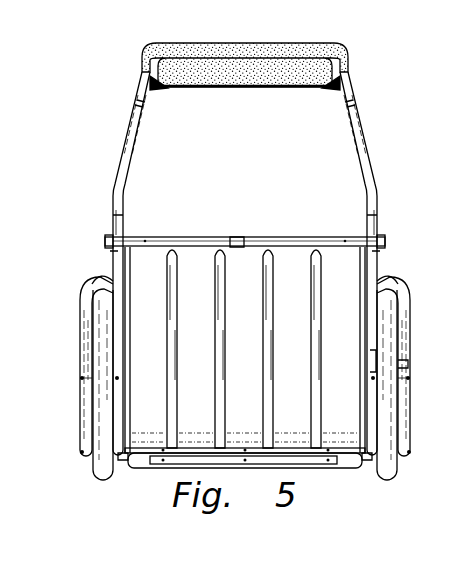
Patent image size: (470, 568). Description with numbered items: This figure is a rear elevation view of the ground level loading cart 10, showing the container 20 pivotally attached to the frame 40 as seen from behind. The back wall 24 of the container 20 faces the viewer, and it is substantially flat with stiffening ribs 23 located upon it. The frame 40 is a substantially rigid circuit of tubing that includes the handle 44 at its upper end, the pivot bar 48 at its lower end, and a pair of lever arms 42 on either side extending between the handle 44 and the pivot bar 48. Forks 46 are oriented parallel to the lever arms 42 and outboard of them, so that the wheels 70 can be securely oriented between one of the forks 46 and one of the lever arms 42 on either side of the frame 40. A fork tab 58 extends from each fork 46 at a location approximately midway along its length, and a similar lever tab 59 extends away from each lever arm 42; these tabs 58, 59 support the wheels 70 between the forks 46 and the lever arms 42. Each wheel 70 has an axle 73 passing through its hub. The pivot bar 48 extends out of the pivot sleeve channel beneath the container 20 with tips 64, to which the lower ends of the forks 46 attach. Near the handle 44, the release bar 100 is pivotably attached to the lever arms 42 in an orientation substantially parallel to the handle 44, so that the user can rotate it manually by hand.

The ground level loading cart 10 is at (123, 72).
The container 20 is at (225, 239).
The stiffening ribs 23 is at (228, 290).
The back wall 24 is at (307, 318).
The frame 40 is at (366, 149).
The lever arms 42 is at (135, 134).
The handle 44 is at (255, 50).
The forks 46 is at (82, 303).
The pivot bar 48 is at (123, 463).
The fork tab 58 is at (378, 365).
The lever tab 59 is at (408, 363).
The tips 64 is at (82, 453).
The wheels 70 is at (103, 420).
The axle 73 is at (116, 378).
The release bar 100 is at (219, 85).